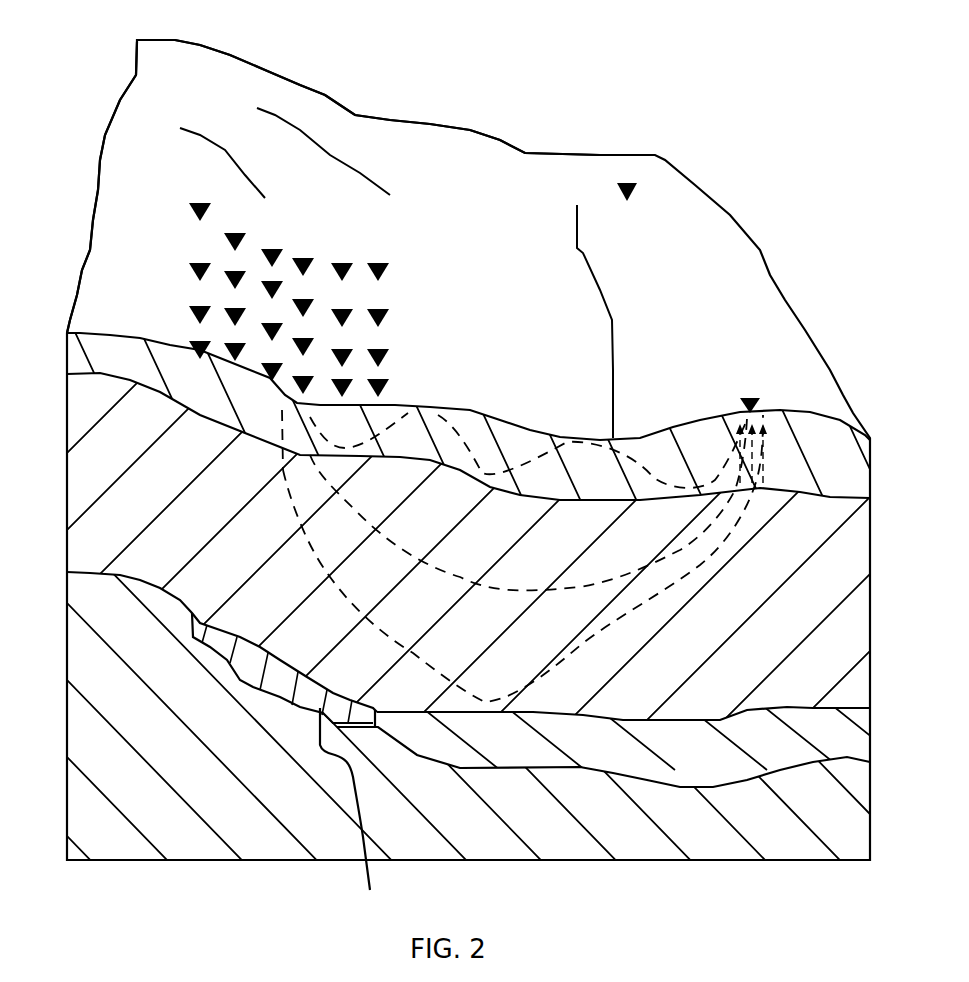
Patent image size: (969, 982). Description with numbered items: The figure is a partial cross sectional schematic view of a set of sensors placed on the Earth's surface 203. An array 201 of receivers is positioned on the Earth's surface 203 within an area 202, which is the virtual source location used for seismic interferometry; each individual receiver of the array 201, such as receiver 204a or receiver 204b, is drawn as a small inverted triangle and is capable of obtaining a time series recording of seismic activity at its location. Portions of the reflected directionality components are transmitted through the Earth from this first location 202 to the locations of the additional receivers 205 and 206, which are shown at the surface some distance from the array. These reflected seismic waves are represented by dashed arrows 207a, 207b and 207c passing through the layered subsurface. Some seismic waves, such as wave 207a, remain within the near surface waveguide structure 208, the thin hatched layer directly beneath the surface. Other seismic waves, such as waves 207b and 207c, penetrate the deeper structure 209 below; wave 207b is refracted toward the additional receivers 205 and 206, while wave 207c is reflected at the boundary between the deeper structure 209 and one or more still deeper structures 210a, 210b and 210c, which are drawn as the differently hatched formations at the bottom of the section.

The array of receivers 201 is at (122, 170).
The area 202 is at (112, 221).
The Earth's surface 203 is at (430, 135).
The receiver 204a is at (380, 272).
The sensor 204b is at (193, 207).
The additional receiver 205 is at (760, 397).
The additional receiver 206 is at (627, 182).
The reflected seismic wave 207a is at (462, 430).
The reflected seismic wave 207b is at (593, 588).
The reflected seismic wave 207c is at (603, 638).
The near surface waveguide structure 208 is at (849, 463).
The deeper structure 209 is at (203, 536).
The still deeper structure 210a is at (361, 813).
The still deeper structure 210b is at (597, 754).
The still deeper structure 210c is at (275, 761).